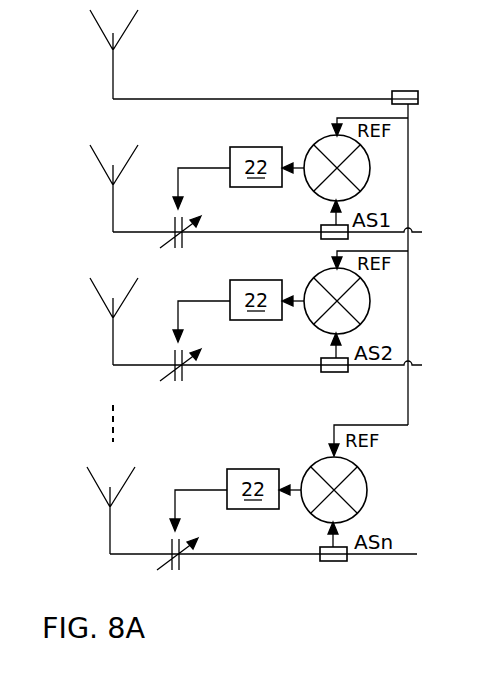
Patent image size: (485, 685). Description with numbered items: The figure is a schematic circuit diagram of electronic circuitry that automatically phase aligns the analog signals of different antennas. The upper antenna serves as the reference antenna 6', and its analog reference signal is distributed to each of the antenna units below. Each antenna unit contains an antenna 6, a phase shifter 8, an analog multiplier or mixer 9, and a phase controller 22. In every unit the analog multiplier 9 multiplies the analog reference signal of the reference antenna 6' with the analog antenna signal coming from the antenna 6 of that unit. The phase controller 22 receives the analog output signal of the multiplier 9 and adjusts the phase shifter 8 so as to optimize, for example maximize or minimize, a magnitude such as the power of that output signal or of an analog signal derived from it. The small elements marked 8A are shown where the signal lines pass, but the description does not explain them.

The reference antenna 6' is at (99, 54).
The antenna 6 is at (97, 349).
The phase shifter 8 is at (186, 246).
The sensor / coupler 8A is at (405, 90).
The analog multiplier (mixer) 9 is at (312, 141).
The phase controller 22 is at (226, 339).